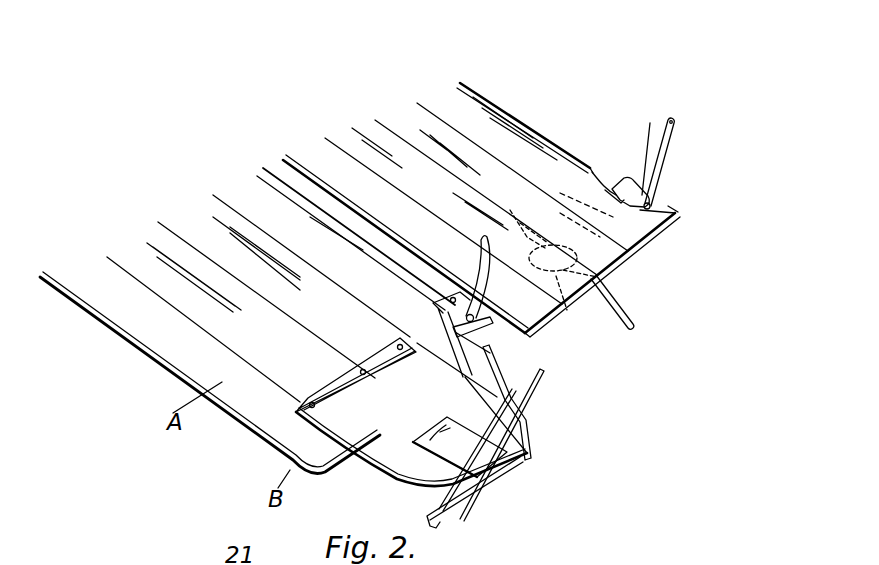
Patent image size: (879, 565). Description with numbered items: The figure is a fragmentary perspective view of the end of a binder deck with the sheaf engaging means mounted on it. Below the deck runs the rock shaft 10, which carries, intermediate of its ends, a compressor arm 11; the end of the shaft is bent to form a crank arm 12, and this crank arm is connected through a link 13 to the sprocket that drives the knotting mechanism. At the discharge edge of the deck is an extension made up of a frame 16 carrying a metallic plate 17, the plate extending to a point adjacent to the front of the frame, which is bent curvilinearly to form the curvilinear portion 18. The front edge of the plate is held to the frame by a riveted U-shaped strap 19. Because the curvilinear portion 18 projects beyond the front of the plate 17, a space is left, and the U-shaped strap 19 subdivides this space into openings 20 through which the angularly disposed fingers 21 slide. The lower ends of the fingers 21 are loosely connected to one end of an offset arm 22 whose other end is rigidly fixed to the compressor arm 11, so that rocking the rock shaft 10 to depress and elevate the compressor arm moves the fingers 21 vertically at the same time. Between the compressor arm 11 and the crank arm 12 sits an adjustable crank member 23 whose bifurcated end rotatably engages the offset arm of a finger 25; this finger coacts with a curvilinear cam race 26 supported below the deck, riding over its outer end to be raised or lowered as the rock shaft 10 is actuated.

The rock shaft 10 is at (613, 187).
The compressor arm 11 is at (472, 252).
The crank arm 12 is at (655, 117).
The link 13 is at (660, 152).
The frame 16 is at (363, 463).
The metallic plate 17 is at (372, 402).
The curvilinear portion 18 is at (457, 490).
The U-shaped strap 19 is at (485, 453).
The openings 20 is at (427, 480).
The angularly disposed fingers 21 is at (502, 402).
The offset arm 22 is at (523, 462).
The adjustable crank member 23 is at (553, 240).
The finger 25 is at (613, 300).
The curvilinear cam race 26 is at (567, 310).